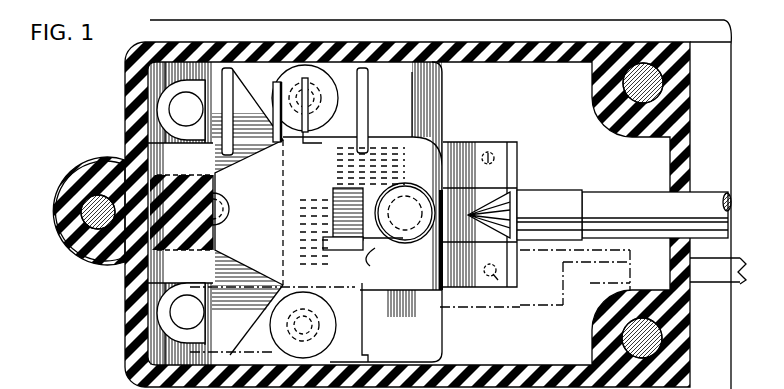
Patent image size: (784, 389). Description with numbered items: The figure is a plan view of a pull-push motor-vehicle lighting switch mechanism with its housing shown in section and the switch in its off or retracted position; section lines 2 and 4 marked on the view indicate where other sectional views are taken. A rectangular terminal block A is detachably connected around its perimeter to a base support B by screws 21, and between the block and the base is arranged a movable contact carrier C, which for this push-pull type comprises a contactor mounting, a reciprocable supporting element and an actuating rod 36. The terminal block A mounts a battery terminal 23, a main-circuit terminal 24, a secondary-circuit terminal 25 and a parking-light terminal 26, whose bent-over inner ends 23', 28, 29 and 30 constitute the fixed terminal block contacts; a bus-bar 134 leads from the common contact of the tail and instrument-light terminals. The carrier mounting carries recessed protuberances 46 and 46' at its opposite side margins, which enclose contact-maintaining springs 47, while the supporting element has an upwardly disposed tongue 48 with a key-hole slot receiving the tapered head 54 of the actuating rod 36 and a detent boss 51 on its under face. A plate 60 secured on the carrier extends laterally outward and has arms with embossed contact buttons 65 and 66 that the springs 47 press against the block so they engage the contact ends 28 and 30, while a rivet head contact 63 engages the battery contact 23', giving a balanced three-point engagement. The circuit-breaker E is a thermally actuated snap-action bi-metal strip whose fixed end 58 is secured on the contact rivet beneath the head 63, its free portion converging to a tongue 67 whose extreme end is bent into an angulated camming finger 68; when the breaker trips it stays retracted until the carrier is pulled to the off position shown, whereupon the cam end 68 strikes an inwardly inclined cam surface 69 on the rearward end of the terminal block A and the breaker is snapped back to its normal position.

The screws 21 is at (660, 78).
The battery terminal 23 is at (575, 276).
The inner end of battery terminal 23' is at (552, 189).
The main-circuit terminal 24 is at (365, 93).
The secondary-circuit terminal 25 is at (381, 260).
The parking-light terminal 26 is at (233, 68).
The inner end of main-circuit terminal 28 is at (359, 206).
The inner end of secondary-circuit terminal 29 is at (357, 198).
The inner end of parking-light terminal 30 is at (300, 80).
The actuating rod 36 is at (707, 198).
The recessed protuberance 46 is at (330, 79).
The recessed protuberance 46' is at (275, 325).
The contact-maintaining springs 47 is at (312, 80).
The tongue 48 is at (513, 142).
The detent boss 51 is at (488, 150).
The tapered head 54 is at (517, 192).
The fixed end of circuit-breaker 58 is at (425, 163).
The plate 60 is at (245, 334).
The contact 63 is at (405, 213).
The contact button 65 is at (168, 108).
The contact button 66 is at (170, 318).
The tongue 67 is at (221, 184).
The camming finger 68 is at (176, 171).
The cam surface 69 is at (143, 280).
The bus-bar 134 is at (583, 293).
The terminal block A is at (572, 55).
The base support B is at (715, 352).
The contact carrier C is at (411, 348).
The circuit-breaker E is at (311, 222).
The section line 2- 2 is at (32, 228).
The section line 4- 4 is at (77, 312).